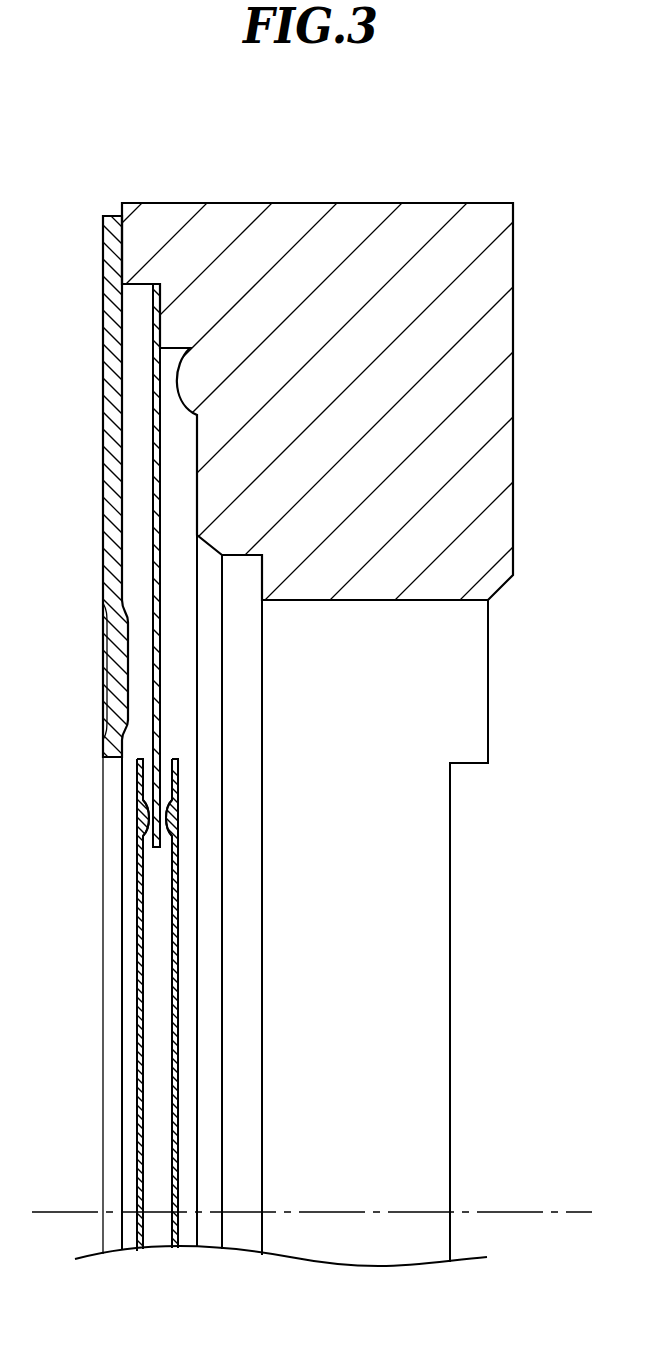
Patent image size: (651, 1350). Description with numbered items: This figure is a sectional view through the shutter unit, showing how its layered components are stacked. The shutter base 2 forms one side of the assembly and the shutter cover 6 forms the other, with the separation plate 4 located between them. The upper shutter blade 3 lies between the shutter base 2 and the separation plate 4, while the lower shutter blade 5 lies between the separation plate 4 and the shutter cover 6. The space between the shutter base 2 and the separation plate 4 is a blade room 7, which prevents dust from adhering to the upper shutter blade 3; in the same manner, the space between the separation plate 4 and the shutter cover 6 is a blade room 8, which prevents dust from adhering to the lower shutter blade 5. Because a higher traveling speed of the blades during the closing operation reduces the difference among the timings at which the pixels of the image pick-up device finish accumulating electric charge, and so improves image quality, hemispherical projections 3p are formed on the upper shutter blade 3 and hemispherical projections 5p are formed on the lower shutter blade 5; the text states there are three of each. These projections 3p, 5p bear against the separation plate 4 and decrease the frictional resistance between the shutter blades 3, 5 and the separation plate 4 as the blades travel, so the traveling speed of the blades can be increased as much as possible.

The shutter base 2 is at (495, 338).
The upper shutter blade 3 is at (178, 1130).
The hemispherical projection 3p is at (170, 819).
The separation plate 4 is at (153, 368).
The lower shutter blade 5 is at (138, 1077).
The hemispherical projection 5p is at (147, 817).
The shutter cover 6 is at (110, 527).
The blade room 7 is at (172, 447).
The blade room 8 is at (135, 422).